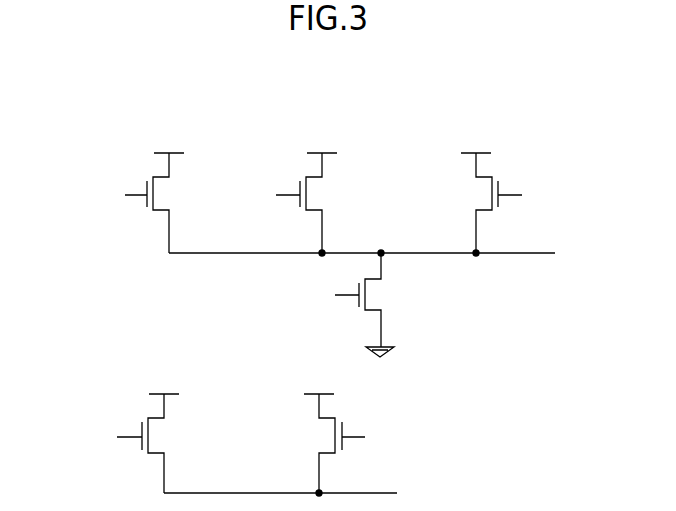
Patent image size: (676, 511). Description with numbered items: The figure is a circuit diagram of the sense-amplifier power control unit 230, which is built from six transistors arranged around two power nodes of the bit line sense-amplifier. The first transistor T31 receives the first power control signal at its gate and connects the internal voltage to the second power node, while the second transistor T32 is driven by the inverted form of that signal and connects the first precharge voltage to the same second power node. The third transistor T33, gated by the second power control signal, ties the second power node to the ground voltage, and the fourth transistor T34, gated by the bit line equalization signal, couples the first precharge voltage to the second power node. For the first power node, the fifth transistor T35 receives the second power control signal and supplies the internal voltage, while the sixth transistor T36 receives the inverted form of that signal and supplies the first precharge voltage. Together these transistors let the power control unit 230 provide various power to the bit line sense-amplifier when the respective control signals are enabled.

The sense-amplifier power control unit 230 is at (88, 151).
The first transistor T31 is at (283, 191).
The second transistor T32 is at (125, 191).
The third transistor T33 is at (358, 307).
The fourth transistor T34 is at (512, 191).
The fifth transistor T35 is at (125, 433).
The sixth transistor T36 is at (361, 433).